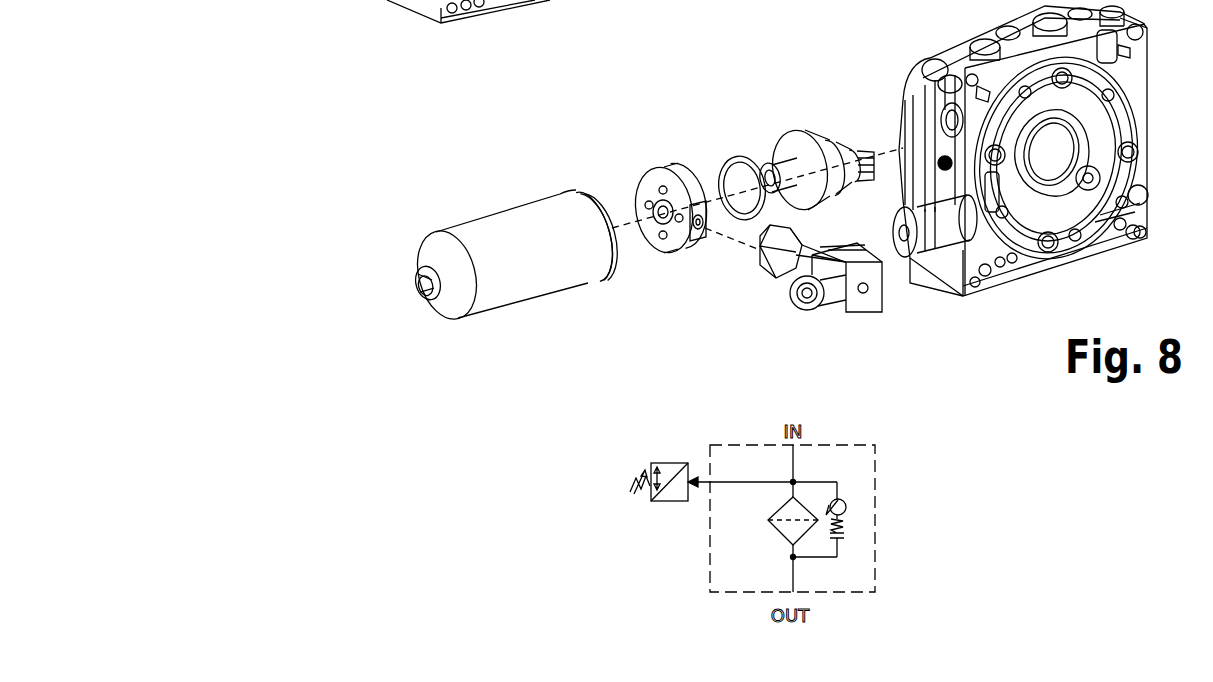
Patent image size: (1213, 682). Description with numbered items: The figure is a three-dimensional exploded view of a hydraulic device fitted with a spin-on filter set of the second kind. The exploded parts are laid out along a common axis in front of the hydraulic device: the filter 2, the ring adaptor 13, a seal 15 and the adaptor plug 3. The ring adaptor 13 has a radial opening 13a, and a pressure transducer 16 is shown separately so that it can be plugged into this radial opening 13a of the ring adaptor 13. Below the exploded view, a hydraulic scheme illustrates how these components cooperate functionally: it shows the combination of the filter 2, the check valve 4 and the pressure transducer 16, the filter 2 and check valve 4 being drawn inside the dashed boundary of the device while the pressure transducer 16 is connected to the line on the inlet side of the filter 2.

The filter 2 is at (527, 296).
The adaptor plug 3 is at (799, 130).
The check valve 4 is at (848, 502).
The ring adaptor 13 is at (665, 162).
The radial opening 13a is at (694, 235).
The seal 15 is at (737, 152).
The pressure transducer 16 is at (872, 305).